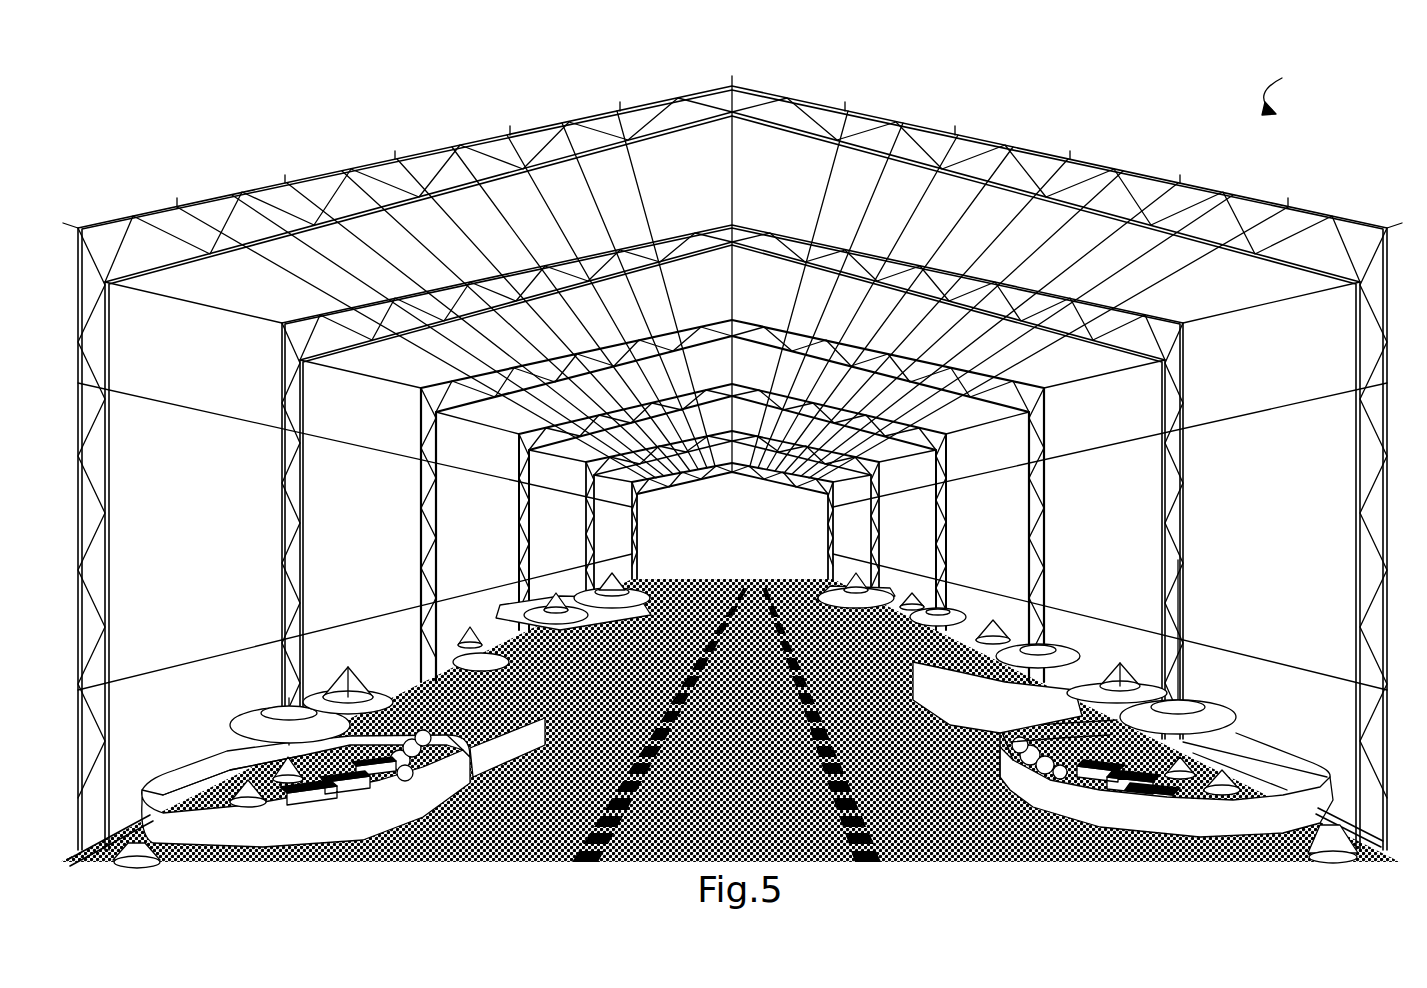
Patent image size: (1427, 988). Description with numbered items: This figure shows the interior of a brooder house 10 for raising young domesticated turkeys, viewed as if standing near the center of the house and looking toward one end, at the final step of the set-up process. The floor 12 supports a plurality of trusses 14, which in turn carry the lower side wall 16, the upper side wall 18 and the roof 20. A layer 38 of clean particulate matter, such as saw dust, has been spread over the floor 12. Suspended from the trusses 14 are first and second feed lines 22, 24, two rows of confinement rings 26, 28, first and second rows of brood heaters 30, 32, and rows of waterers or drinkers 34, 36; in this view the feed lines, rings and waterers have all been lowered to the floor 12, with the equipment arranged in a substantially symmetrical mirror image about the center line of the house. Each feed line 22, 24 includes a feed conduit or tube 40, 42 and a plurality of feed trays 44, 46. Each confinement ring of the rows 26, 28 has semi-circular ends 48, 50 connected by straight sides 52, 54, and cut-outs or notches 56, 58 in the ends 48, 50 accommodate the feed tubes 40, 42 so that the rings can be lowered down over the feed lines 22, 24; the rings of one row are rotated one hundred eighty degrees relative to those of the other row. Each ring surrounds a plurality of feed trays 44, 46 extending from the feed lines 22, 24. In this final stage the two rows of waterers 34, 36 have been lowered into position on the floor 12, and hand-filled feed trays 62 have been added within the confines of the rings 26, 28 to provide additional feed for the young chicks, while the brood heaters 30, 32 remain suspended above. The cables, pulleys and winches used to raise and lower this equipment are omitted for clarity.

The brooder house 10 is at (1285, 89).
The floor 12 is at (768, 580).
The trusses 14 is at (306, 612).
The lower side wall 16 is at (163, 690).
The upper side wall 18 is at (350, 430).
The roof 20 is at (748, 148).
The first feed line 22 is at (1240, 773).
The second feed line 24 is at (215, 757).
The first row of confinement rings 26 is at (985, 783).
The second row of confinement rings 28 is at (497, 767).
The first row of brood heaters 30 is at (962, 605).
The second row of brood heaters 32 is at (240, 722).
The waterers 34 is at (962, 736).
The waterers 36 is at (535, 716).
The layer of clean particulate matter 38 is at (410, 845).
The feed conduit or tube 40 is at (1085, 672).
The feed conduit or tube 42 is at (393, 693).
The feed trays 44 is at (1300, 860).
The feed trays 46 is at (150, 866).
The semi-circular end 48 is at (1210, 830).
The semi-circular end 50 is at (238, 840).
The straight side 52 is at (452, 790).
The straight side 54 is at (218, 757).
The cut-out or notch 56 is at (1330, 790).
The cut-out or notch 58 is at (140, 815).
The hand-filled feed trays 62 is at (345, 758).